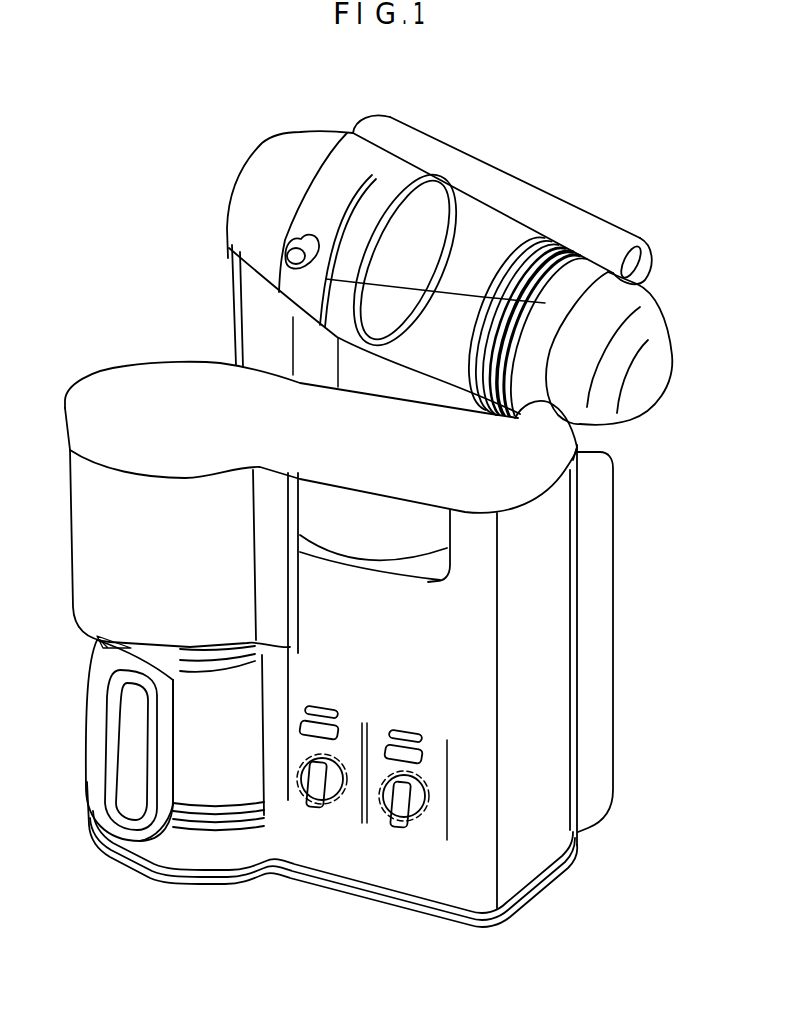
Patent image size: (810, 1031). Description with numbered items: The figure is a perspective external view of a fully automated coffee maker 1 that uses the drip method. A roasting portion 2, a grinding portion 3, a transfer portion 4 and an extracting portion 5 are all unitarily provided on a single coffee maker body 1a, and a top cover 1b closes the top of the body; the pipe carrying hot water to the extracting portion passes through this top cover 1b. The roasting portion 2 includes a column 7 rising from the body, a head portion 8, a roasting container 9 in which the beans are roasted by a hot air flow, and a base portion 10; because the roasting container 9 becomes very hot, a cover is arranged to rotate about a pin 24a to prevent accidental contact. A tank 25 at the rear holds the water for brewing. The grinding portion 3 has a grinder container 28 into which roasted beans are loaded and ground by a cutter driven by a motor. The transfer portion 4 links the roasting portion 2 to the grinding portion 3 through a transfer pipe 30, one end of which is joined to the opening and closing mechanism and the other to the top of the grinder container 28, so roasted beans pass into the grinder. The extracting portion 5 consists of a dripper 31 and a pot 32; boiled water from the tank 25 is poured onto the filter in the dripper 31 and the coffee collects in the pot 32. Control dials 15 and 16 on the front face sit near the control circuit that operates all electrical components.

The coffee maker 1 is at (487, 78).
The coffee maker body 1a is at (550, 632).
The top cover 1b is at (141, 378).
The roasting portion 2 is at (252, 137).
The grinding portion 3 is at (413, 550).
The transfer portion 4 is at (495, 400).
The extracting portion 5 is at (70, 599).
The column 7 is at (243, 301).
The head portion 8 is at (296, 149).
The roasting container 9 is at (418, 340).
The base portion 10 is at (633, 300).
The control dial 15 is at (342, 795).
The control dial 16 is at (418, 810).
The pin 24a is at (303, 240).
The tank 25 is at (613, 533).
The grinder container 28 is at (370, 547).
The transfer pipe 30 is at (578, 448).
The dripper 31 is at (72, 510).
The pot 32 is at (245, 694).